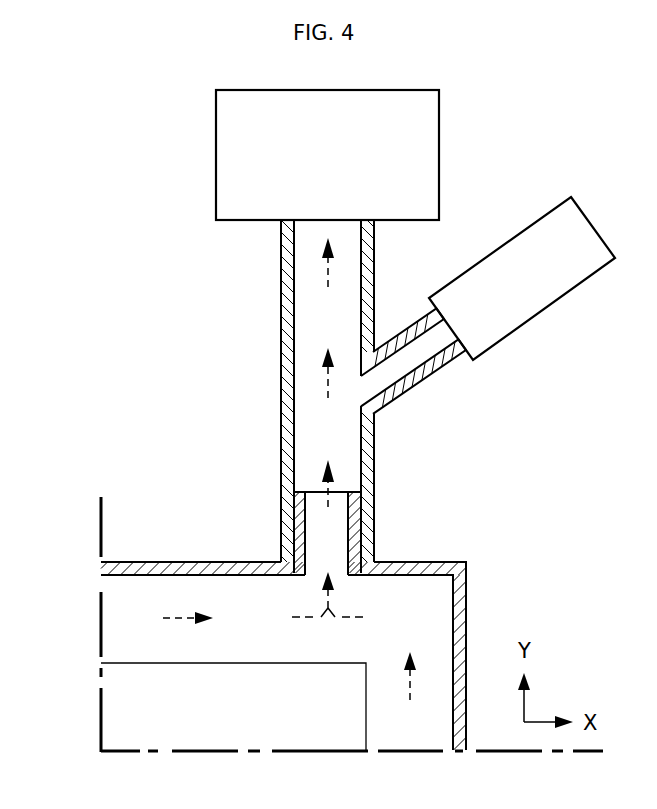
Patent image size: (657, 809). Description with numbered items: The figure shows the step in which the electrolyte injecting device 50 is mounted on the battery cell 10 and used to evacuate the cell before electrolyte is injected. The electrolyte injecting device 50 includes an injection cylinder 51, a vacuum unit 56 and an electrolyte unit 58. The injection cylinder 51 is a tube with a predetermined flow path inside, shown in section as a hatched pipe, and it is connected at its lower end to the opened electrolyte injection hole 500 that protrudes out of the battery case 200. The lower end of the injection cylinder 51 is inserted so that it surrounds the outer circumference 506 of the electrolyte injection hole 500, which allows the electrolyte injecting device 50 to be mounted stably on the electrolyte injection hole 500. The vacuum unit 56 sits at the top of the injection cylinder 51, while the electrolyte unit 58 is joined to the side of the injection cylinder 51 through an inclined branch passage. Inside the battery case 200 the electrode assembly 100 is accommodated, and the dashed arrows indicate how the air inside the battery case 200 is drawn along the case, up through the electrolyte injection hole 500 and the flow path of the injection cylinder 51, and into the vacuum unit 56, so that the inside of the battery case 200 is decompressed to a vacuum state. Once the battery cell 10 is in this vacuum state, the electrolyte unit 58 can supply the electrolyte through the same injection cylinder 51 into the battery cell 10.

The battery cell 10 is at (166, 456).
The electrolyte injecting device 50 is at (240, 288).
The injection cylinder 51 is at (288, 357).
The vacuum unit 56 is at (227, 155).
The electrolyte unit 58 is at (568, 281).
The electrode assembly 100 is at (104, 704).
The battery case 200 is at (104, 569).
The electrolyte injection hole 500 is at (305, 527).
The outer circumference 506 is at (348, 527).